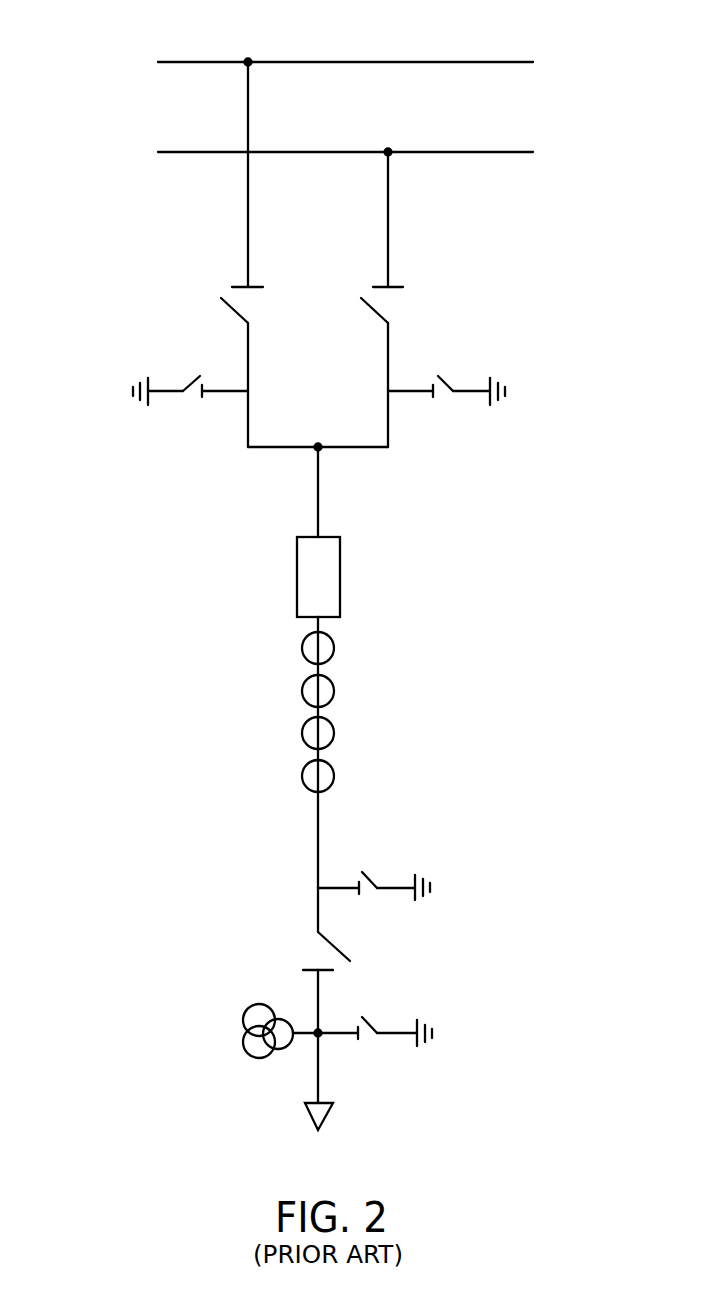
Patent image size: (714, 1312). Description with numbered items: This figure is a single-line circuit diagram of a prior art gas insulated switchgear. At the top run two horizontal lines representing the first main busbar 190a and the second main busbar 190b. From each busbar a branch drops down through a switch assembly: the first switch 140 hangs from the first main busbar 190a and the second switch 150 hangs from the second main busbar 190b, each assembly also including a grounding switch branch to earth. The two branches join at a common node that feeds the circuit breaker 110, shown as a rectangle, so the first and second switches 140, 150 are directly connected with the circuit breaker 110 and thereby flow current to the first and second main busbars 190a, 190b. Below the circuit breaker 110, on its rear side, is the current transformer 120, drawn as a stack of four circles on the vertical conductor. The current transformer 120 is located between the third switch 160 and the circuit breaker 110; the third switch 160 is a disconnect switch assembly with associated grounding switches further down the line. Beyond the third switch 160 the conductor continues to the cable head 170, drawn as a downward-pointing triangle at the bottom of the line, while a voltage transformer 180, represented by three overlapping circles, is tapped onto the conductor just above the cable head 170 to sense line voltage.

The first main busbar 190a is at (423, 62).
The second main busbar 190b is at (472, 152).
The first switch 140 is at (113, 282).
The second switch 150 is at (518, 282).
The circuit breaker 110 is at (297, 575).
The current transformer 120 is at (302, 733).
The third switch 160 is at (442, 858).
The cable head 170 is at (330, 1115).
The voltage transformer 180 is at (243, 1022).